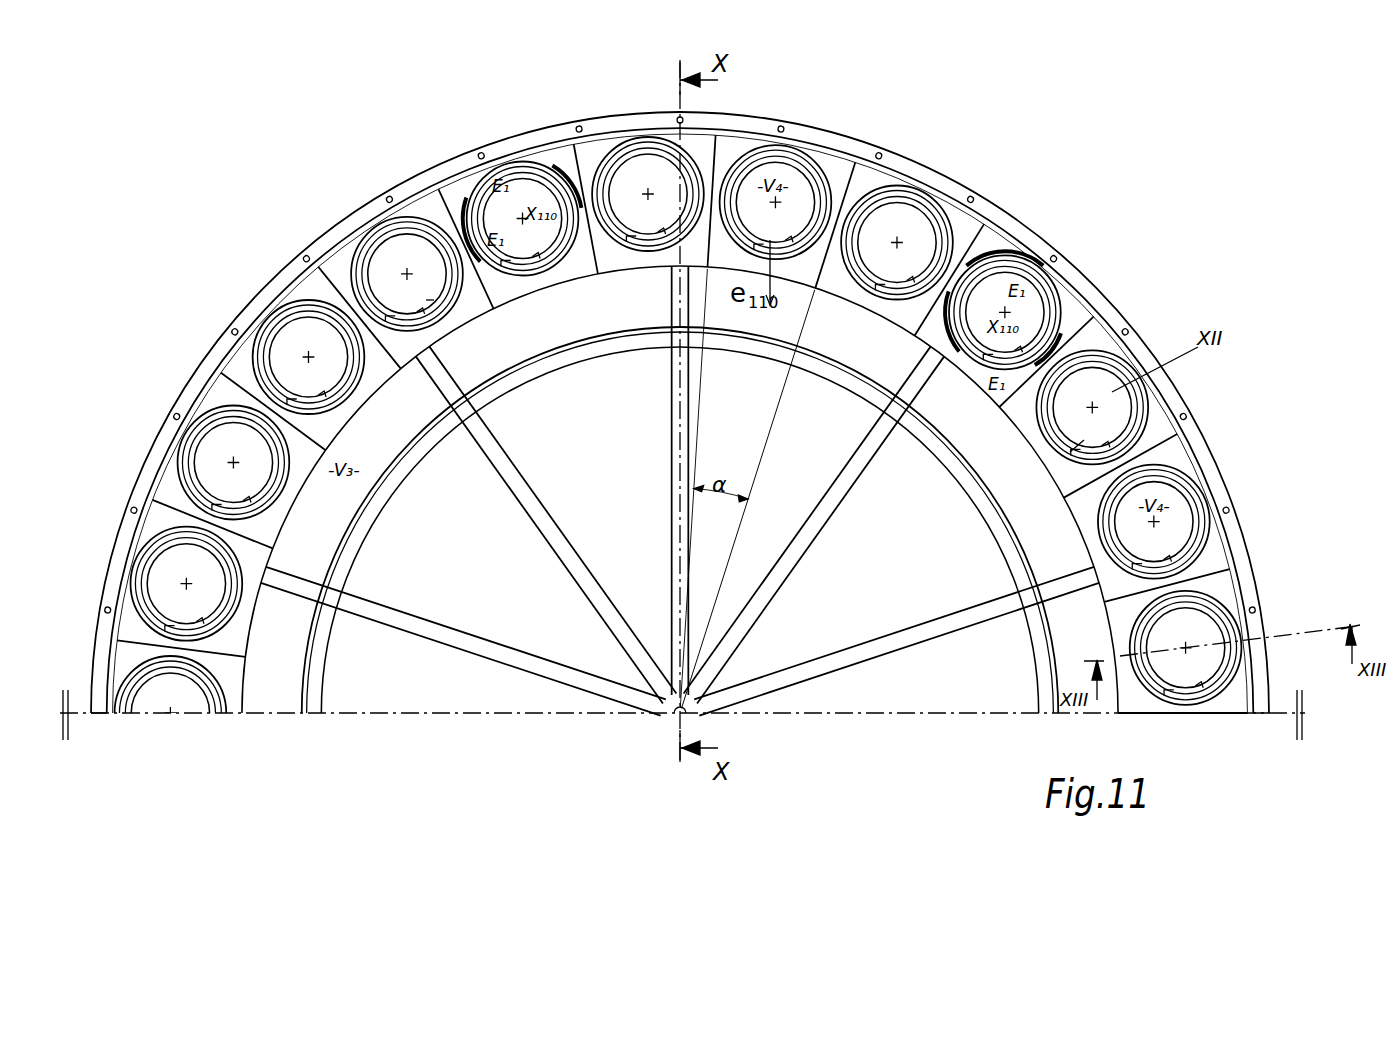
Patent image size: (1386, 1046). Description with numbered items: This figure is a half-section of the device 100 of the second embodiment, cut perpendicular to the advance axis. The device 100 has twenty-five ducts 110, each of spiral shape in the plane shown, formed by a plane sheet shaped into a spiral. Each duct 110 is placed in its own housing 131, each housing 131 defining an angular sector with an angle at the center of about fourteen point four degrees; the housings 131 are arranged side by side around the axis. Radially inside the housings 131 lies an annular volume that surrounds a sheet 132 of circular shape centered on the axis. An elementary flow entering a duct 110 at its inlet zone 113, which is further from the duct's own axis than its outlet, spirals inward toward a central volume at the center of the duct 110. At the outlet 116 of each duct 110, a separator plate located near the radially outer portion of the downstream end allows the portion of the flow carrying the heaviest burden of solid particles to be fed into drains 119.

The device 100 is at (1081, 176).
The duct 110 is at (672, 148).
The inlet zone 113 is at (440, 334).
The outlet 116 is at (430, 305).
The drain 119 is at (1078, 446).
The housing 131 is at (718, 262).
The sheet 132 is at (378, 486).